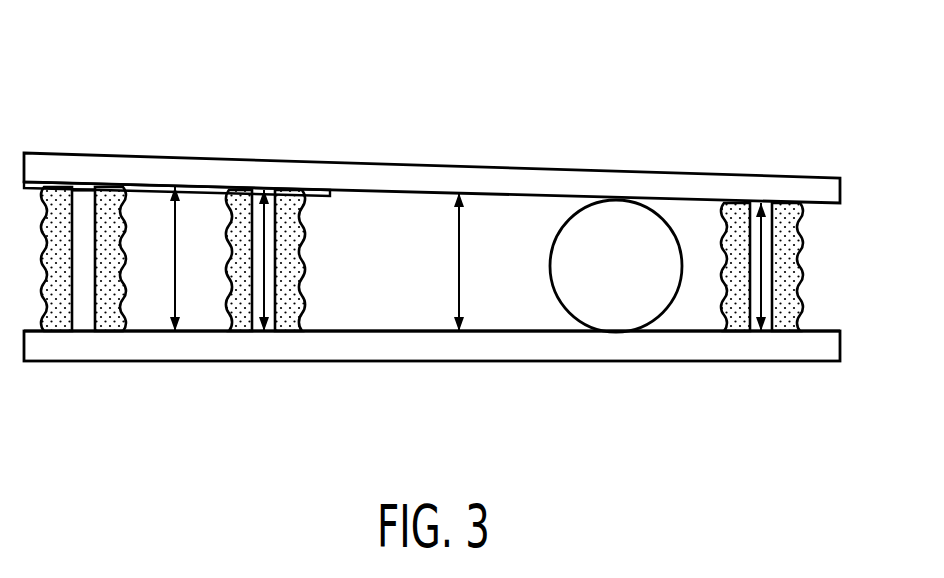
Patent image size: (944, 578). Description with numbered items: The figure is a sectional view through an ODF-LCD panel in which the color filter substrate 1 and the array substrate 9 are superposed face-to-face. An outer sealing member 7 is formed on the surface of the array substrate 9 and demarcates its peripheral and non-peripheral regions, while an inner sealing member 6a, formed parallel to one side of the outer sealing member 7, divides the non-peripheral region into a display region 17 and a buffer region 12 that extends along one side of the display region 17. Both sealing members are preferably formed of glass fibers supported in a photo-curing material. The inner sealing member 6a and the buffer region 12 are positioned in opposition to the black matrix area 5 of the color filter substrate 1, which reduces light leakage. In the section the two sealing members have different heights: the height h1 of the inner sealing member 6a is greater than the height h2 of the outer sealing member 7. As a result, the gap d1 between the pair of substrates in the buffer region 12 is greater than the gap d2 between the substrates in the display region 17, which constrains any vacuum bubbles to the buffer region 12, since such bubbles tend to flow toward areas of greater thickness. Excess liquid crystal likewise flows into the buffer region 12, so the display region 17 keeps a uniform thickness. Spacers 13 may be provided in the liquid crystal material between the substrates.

The color filter substrate 1 is at (818, 200).
The black matrix area 5 is at (313, 192).
The inner sealing member 6a is at (288, 190).
The outer sealing member 7 is at (107, 188).
The array substrate 9 is at (823, 347).
The buffer region 12 is at (200, 220).
The spacers 13 is at (617, 223).
The display region 17 is at (388, 320).
The gap of the buffer region d1 is at (192, 259).
The gap of the display region d2 is at (477, 262).
The height of the inner sealing member h1 is at (268, 271).
The height of the outer sealing member h2 is at (765, 270).